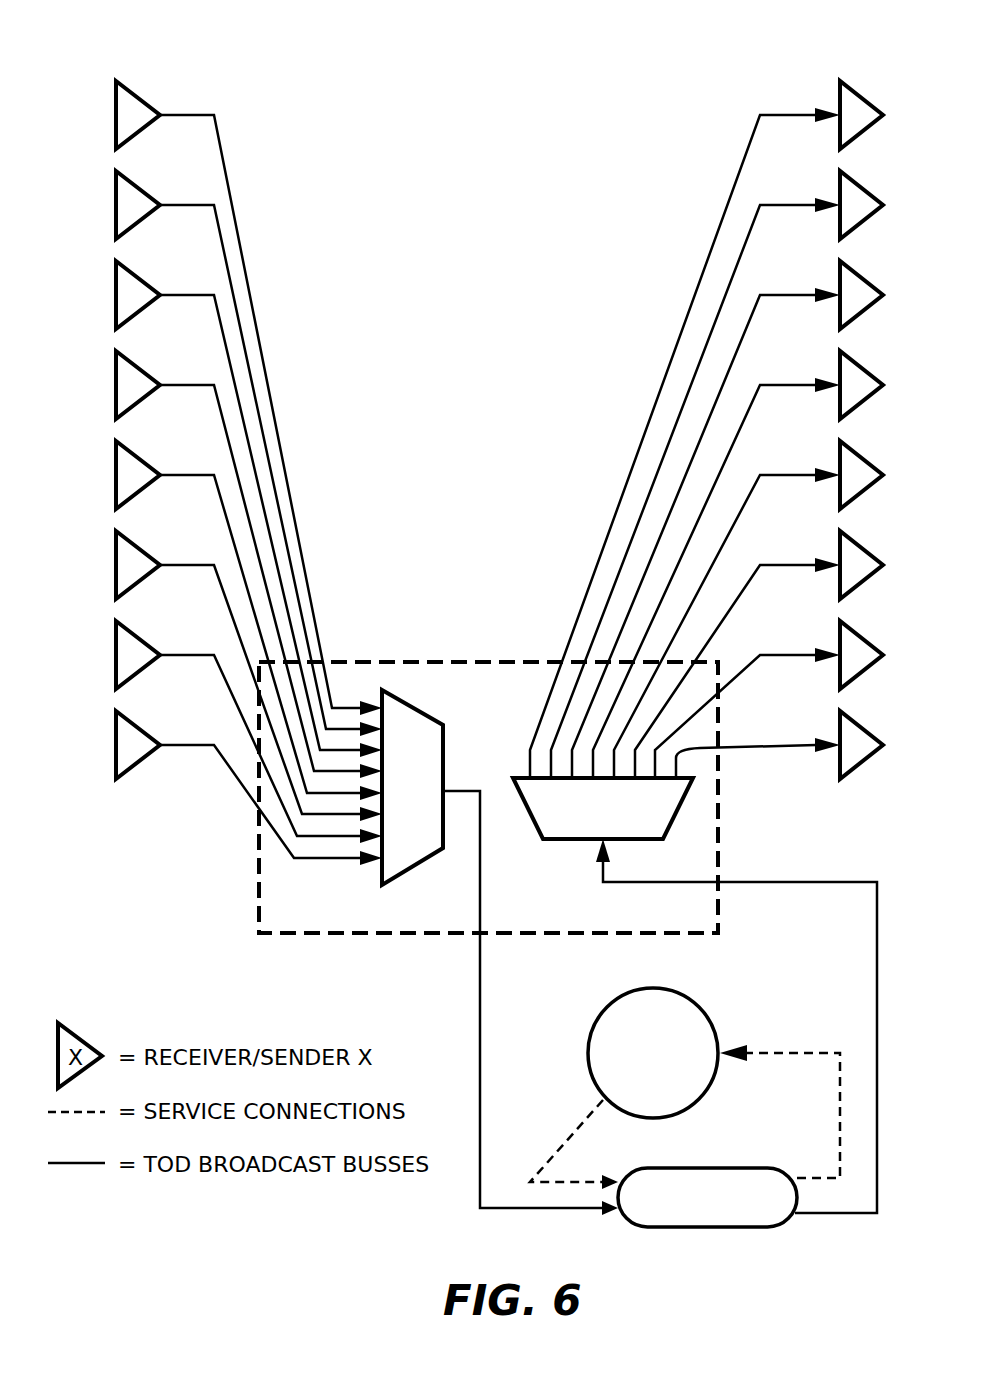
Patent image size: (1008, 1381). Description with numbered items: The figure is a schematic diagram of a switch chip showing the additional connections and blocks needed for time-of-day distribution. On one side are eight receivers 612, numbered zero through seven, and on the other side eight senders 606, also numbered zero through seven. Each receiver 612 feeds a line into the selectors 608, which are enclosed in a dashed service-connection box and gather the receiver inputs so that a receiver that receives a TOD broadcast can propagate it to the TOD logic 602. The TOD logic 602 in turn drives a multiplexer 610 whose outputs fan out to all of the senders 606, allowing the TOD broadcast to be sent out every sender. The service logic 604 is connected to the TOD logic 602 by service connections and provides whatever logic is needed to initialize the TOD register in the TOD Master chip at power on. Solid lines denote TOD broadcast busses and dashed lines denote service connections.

The TOD logic 602 is at (713, 1168).
The service logic 604 is at (657, 988).
The senders 606 is at (838, 47).
The selectors 608 is at (398, 700).
The multiplexer 610 is at (680, 808).
The receivers 612 is at (133, 38).